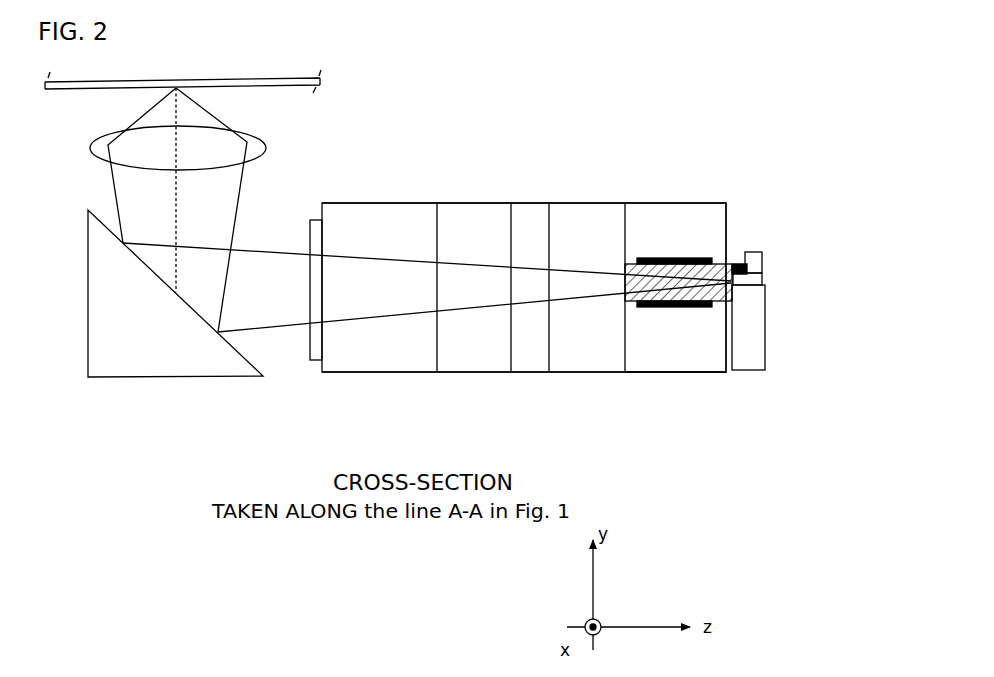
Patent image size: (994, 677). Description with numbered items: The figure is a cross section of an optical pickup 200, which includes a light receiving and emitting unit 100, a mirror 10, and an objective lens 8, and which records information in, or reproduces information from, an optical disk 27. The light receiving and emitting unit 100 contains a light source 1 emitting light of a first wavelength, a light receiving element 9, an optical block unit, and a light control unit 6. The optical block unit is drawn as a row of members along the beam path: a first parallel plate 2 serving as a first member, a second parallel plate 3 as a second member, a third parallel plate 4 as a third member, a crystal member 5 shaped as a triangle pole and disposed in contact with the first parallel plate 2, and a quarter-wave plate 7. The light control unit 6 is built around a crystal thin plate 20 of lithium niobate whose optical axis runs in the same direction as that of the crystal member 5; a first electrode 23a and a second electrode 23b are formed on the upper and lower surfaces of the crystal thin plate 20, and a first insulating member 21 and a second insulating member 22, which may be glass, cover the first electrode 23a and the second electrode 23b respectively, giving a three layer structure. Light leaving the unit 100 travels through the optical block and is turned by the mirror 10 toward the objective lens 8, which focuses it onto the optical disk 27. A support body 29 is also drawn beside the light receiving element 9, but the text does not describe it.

The light source 1 is at (762, 280).
The first parallel plate 2 is at (470, 360).
The second parallel plate 3 is at (573, 358).
The third parallel plate 4 is at (527, 360).
The crystal member 5 is at (361, 358).
The light control unit 6 is at (697, 415).
The quarter-wave plate 7 is at (308, 356).
The objective lens 8 is at (92, 150).
The light receiving element 9 is at (748, 268).
The mirror 10 is at (135, 370).
The crystal thin plate 20 is at (625, 263).
The first insulating member 21 is at (705, 205).
The second insulating member 22 is at (697, 350).
The first electrode 23a is at (682, 262).
The second electrode 23b is at (655, 307).
The optical disk 27 is at (222, 78).
The substrate 29 is at (750, 353).
The light receiving and emitting unit 100 is at (613, 443).
The optical pickup 200 is at (372, 113).